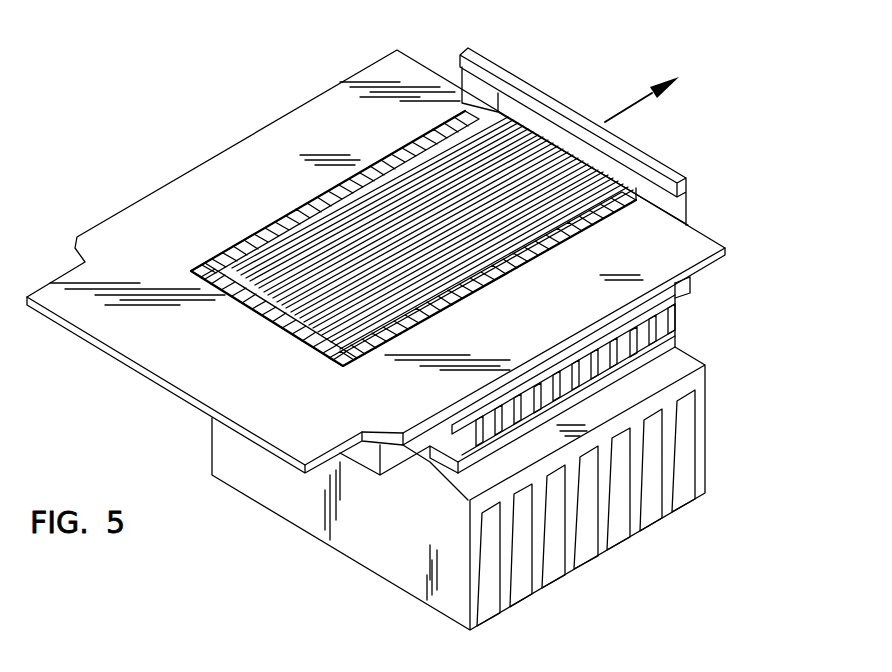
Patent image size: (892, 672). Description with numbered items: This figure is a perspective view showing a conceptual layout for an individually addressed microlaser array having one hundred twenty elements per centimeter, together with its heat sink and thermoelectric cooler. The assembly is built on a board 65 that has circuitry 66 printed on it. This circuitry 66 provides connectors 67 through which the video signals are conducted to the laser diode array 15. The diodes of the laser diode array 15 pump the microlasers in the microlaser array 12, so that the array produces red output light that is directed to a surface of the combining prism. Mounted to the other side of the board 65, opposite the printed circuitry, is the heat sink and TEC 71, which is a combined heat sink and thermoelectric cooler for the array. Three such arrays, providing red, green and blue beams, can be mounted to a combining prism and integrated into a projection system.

The laser diode bar 12 is at (646, 190).
The optical output bar 15 is at (535, 128).
The mounting plate 65 is at (137, 213).
The laser diode array submount 66 is at (360, 147).
The electrical contact strips 67 is at (300, 203).
The heat sink 71 is at (708, 340).